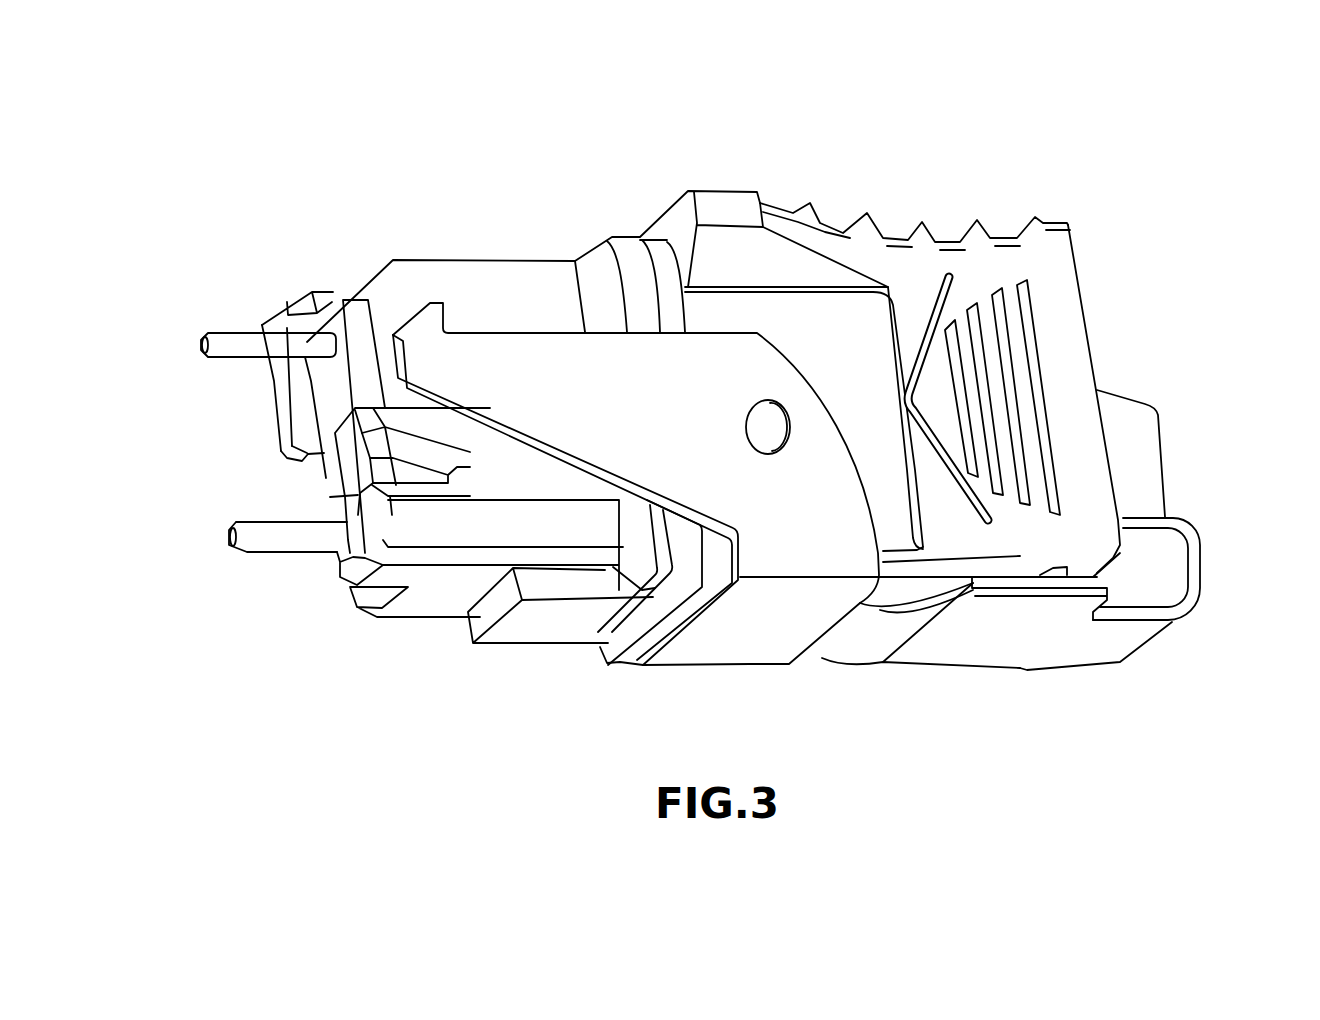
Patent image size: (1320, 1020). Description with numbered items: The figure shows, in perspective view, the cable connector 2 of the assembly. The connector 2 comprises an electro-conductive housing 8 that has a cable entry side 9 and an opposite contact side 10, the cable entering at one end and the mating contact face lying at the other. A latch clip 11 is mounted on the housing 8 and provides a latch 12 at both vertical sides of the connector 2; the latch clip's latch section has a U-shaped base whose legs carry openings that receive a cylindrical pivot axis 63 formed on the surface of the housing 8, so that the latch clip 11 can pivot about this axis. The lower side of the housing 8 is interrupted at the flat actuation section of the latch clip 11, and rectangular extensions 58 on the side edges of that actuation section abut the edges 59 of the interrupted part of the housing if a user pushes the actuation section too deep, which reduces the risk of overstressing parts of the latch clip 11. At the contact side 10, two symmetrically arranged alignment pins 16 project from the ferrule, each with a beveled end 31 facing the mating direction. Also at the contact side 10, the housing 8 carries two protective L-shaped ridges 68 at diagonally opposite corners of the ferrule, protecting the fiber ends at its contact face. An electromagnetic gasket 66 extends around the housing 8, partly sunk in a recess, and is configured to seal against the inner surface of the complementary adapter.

The cable connector 2 is at (1033, 186).
The electro-conductive housing 8 is at (908, 265).
The cable entry side 9 is at (1222, 355).
The contact side 10 is at (242, 592).
The latch clip 11 is at (742, 648).
The latch 12 is at (510, 372).
The alignment pins 16 is at (272, 340).
The beveled end 31 is at (217, 343).
The rectangular extensions 58 is at (1055, 590).
The edges 59 is at (983, 565).
The cylindrical pivot axis 63 is at (770, 440).
The electromagnetic gasket 66 is at (628, 640).
The protective L-shaped ridges 68 is at (352, 498).